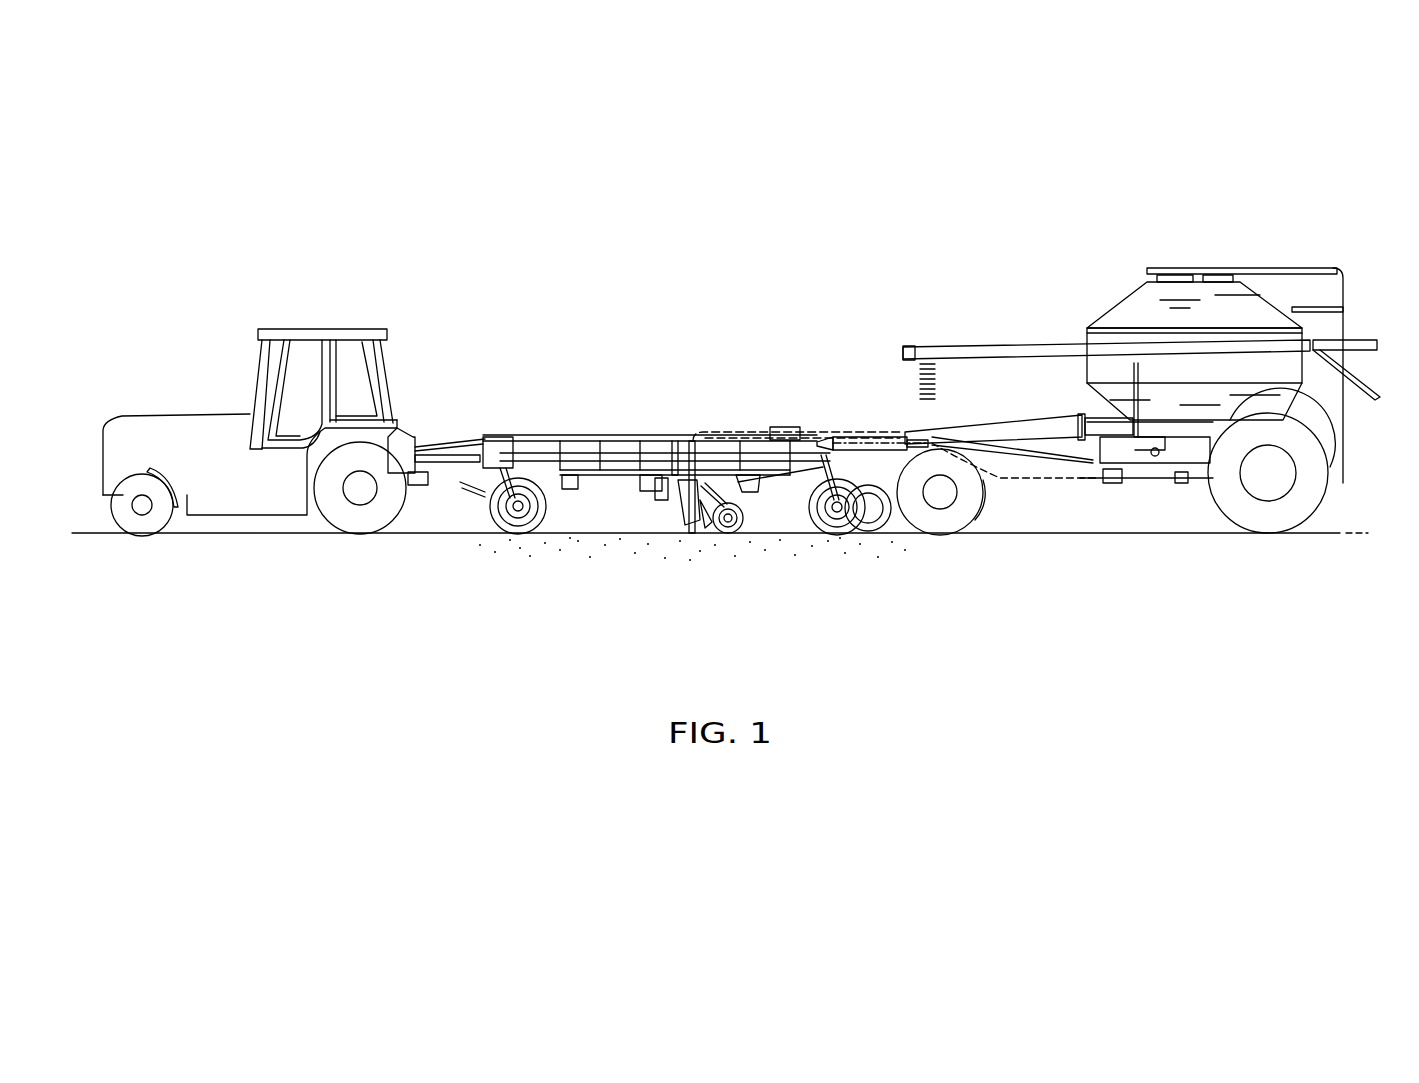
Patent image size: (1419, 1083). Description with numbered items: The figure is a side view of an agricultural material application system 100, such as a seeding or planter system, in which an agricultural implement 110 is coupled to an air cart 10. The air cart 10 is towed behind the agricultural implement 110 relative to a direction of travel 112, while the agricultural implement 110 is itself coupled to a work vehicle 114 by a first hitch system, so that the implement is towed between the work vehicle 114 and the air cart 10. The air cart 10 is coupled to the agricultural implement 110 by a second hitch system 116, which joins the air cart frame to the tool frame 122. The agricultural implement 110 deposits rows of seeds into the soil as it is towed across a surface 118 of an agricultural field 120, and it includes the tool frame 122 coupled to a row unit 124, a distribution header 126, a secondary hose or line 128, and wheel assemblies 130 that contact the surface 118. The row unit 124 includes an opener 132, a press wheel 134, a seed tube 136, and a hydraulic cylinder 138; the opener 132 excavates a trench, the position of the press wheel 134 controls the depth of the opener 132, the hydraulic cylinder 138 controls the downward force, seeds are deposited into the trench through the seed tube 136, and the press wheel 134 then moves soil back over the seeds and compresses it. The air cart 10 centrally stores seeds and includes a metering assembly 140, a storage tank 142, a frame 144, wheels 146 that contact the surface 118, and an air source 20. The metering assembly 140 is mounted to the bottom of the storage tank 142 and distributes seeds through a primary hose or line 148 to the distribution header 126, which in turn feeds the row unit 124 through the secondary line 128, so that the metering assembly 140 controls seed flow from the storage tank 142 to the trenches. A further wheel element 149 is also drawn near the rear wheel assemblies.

The air cart 10 is at (1145, 384).
The air source 20 is at (1318, 420).
The agricultural material application system 100 is at (694, 490).
The agricultural implement 110 is at (573, 433).
The direction of travel 112 is at (758, 330).
The work vehicle 114 is at (315, 316).
The second hitch system 116 is at (817, 440).
The surface 118 is at (1107, 533).
The agricultural field 120 is at (953, 646).
The tool frame 122 is at (675, 447).
The row unit 124 is at (672, 513).
The distribution header 126 is at (787, 427).
The hose or line 128 is at (737, 433).
The wheel assemblies 130 is at (503, 533).
The opener 132 is at (690, 533).
The press wheel 134 is at (743, 517).
The seed tube 136 is at (712, 525).
The hydraulic cylinder 138 is at (652, 502).
The metering assembly 140 is at (1160, 453).
The storage tank 142 is at (1140, 305).
The frame 144 is at (993, 425).
The wheels 146 is at (1267, 532).
The hose or line 148 is at (1043, 497).
The caster wheels 149 is at (990, 507).